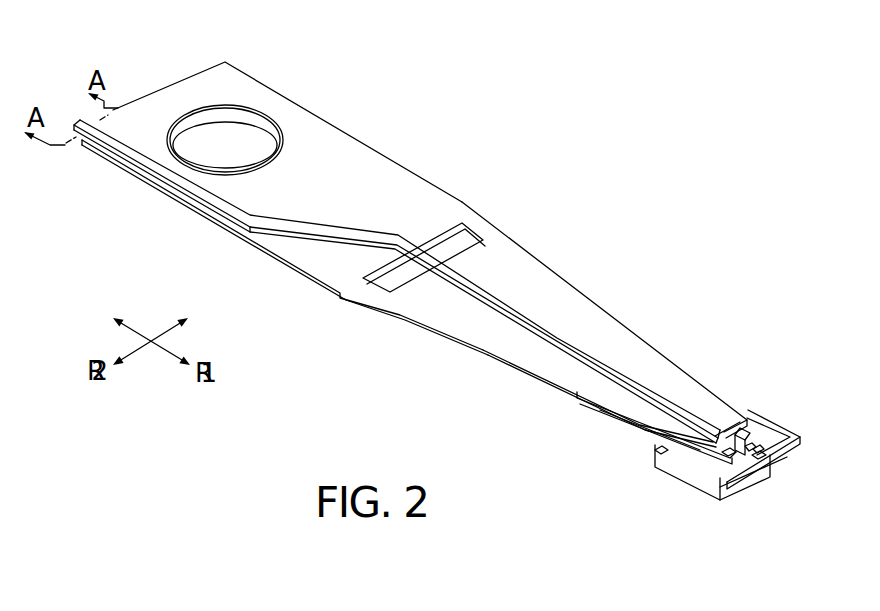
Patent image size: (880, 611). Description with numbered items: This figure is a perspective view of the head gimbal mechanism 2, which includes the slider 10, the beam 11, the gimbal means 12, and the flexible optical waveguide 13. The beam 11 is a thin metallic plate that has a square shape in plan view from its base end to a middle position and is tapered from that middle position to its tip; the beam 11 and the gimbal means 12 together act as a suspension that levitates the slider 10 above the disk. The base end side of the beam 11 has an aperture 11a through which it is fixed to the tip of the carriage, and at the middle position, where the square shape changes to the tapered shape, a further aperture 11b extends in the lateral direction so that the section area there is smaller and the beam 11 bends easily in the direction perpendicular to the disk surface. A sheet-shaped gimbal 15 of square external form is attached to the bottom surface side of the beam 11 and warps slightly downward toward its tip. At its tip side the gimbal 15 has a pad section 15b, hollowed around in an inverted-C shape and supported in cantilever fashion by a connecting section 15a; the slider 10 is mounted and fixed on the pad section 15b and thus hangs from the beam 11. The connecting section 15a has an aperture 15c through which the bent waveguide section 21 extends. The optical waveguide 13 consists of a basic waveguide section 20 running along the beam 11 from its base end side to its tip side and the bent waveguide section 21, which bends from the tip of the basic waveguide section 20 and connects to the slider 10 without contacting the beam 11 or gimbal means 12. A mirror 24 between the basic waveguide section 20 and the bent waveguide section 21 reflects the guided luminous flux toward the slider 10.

The head gimbal mechanism 2 is at (581, 201).
The slider 10 is at (697, 480).
The beam 11 is at (373, 173).
The aperture 11a is at (237, 137).
The aperture 11b is at (463, 243).
The gimbal means 12 is at (610, 427).
The flexible optical waveguide 13 is at (487, 308).
The gimbal 15 is at (787, 437).
The connecting section 15a is at (729, 455).
The pad section 15b is at (655, 453).
The aperture 15c is at (757, 452).
The basic waveguide section 20 is at (560, 333).
The bent waveguide section 21 is at (749, 449).
The mirror 24 is at (747, 440).